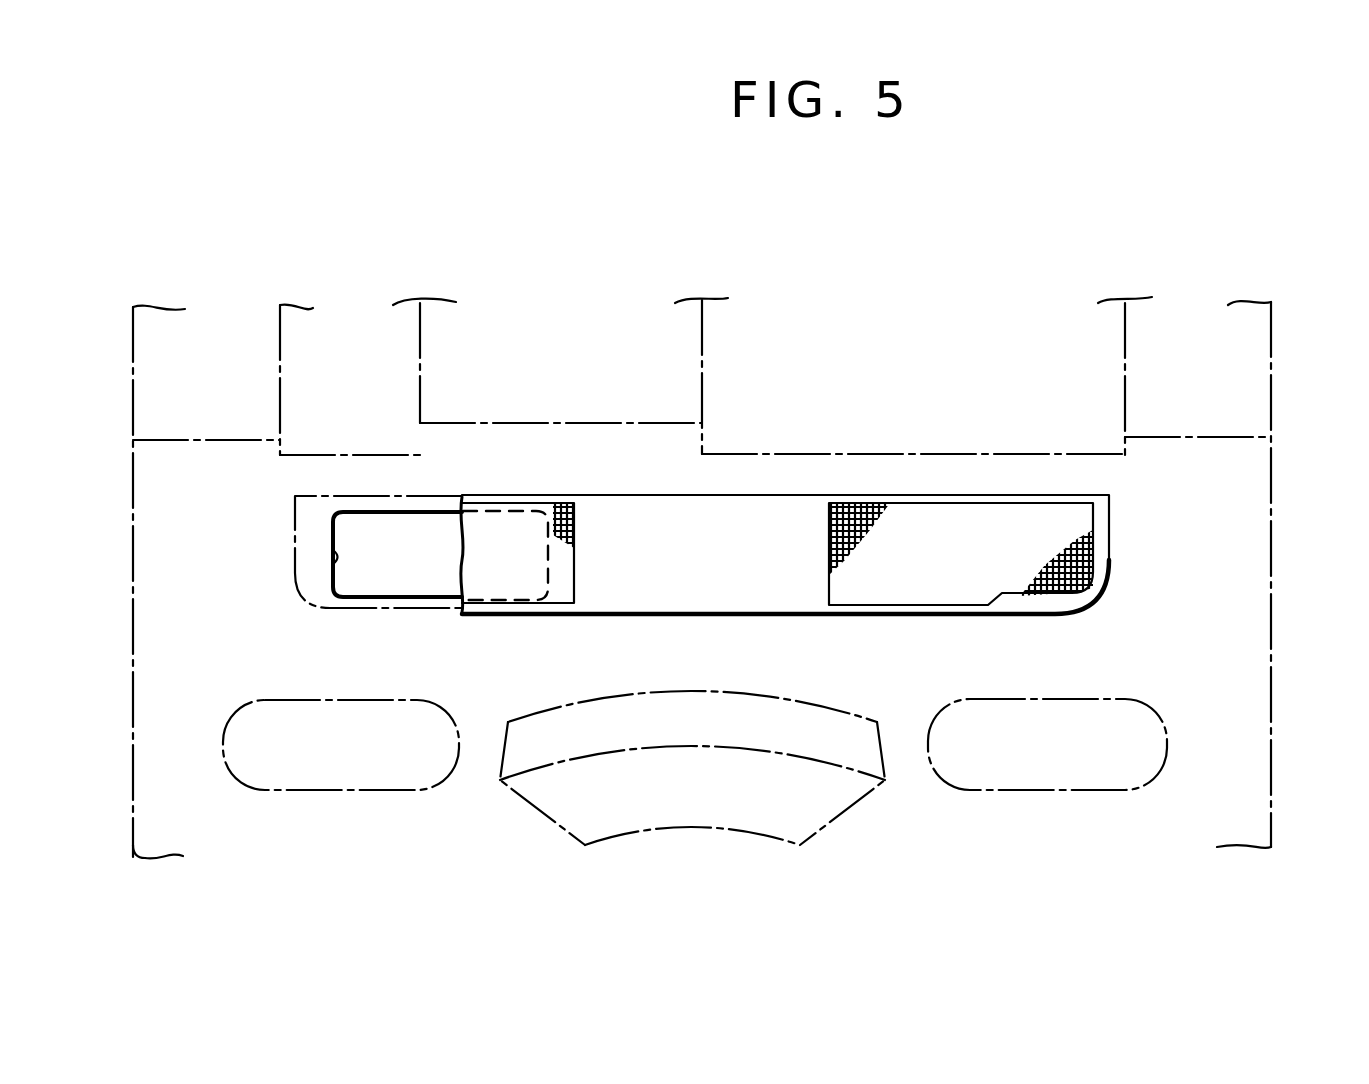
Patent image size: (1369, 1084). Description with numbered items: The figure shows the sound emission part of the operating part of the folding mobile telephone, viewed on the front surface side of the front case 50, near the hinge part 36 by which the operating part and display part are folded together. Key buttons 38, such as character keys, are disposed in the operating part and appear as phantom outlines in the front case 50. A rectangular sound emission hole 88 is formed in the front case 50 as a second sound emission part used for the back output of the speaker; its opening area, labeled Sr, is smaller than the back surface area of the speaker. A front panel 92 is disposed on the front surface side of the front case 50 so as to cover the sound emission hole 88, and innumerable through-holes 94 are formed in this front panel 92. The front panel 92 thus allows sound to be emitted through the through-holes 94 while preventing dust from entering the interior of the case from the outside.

The hinge part 36 is at (1227, 392).
The front case 50 is at (1270, 820).
The front panel 92 is at (603, 494).
The through-holes 94 is at (557, 500).
The sound emission hole 88 is at (335, 560).
The key buttons 38 is at (818, 836).